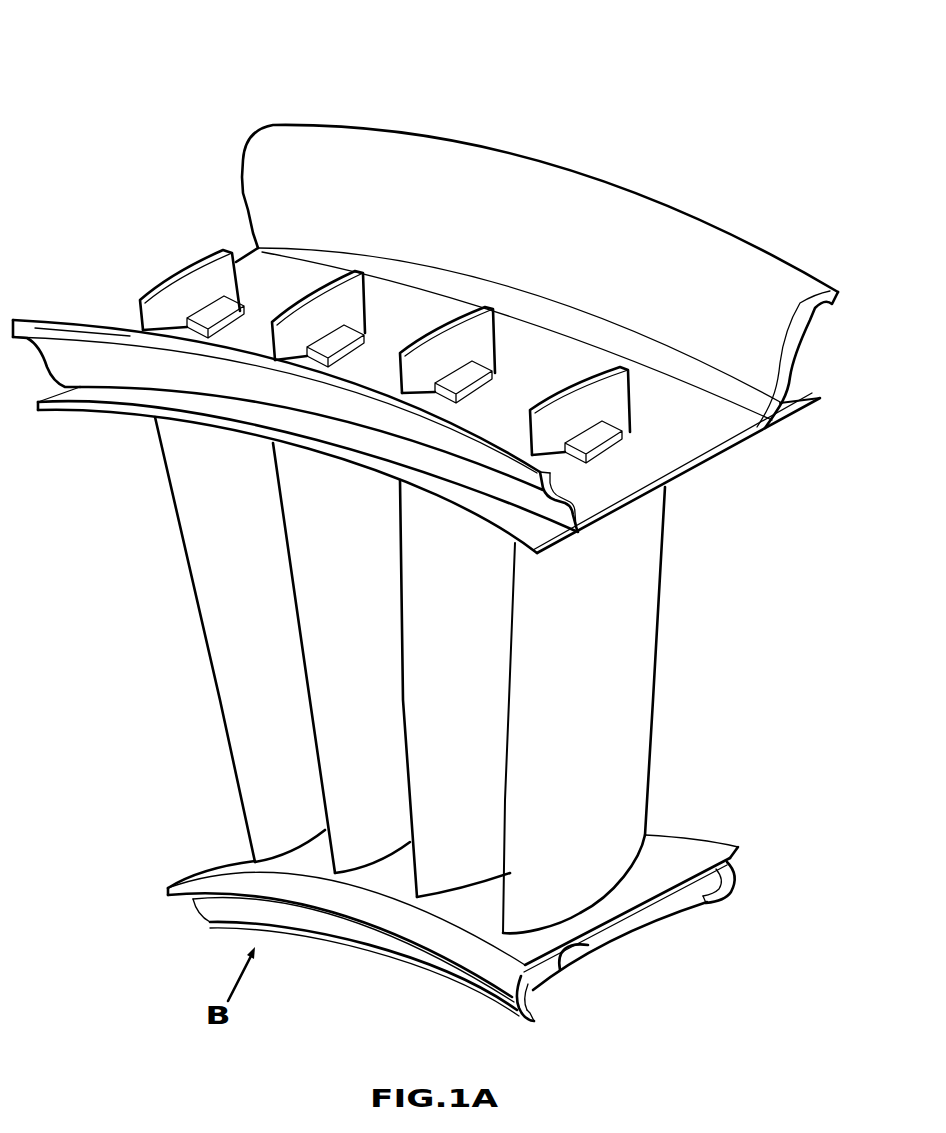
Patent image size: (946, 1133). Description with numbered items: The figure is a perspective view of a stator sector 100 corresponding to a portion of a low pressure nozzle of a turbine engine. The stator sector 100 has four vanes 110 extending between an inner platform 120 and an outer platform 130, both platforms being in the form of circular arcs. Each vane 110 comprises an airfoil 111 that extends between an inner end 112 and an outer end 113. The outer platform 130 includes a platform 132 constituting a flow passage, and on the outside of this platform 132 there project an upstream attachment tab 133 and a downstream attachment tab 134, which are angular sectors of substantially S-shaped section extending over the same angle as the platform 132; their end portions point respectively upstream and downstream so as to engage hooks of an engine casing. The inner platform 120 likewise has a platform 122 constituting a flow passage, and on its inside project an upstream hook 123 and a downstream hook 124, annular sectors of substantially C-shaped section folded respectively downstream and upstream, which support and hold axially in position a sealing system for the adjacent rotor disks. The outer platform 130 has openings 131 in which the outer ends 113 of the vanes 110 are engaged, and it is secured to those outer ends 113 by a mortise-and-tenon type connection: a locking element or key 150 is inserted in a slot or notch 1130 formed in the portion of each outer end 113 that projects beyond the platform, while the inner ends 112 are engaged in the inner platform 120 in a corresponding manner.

The stator sector 100 is at (63, 75).
The vane 110 is at (296, 637).
The airfoil 111 is at (317, 560).
The inner end 112 is at (580, 967).
The outer end 113 is at (158, 293).
The slot or notch 1130 is at (213, 313).
The inner platform 120 is at (652, 918).
The platform constituting a flow passage 122 is at (703, 840).
The upstream hook 123 is at (714, 897).
The downstream hook 124 is at (532, 1021).
The outer platform 130 is at (740, 462).
The opening 131 is at (240, 311).
The platform constituting a flow passage 132 is at (802, 412).
The upstream attachment tab 133 is at (38, 327).
The downstream attachment tab 134 is at (800, 283).
The locking element or key 150 is at (197, 327).